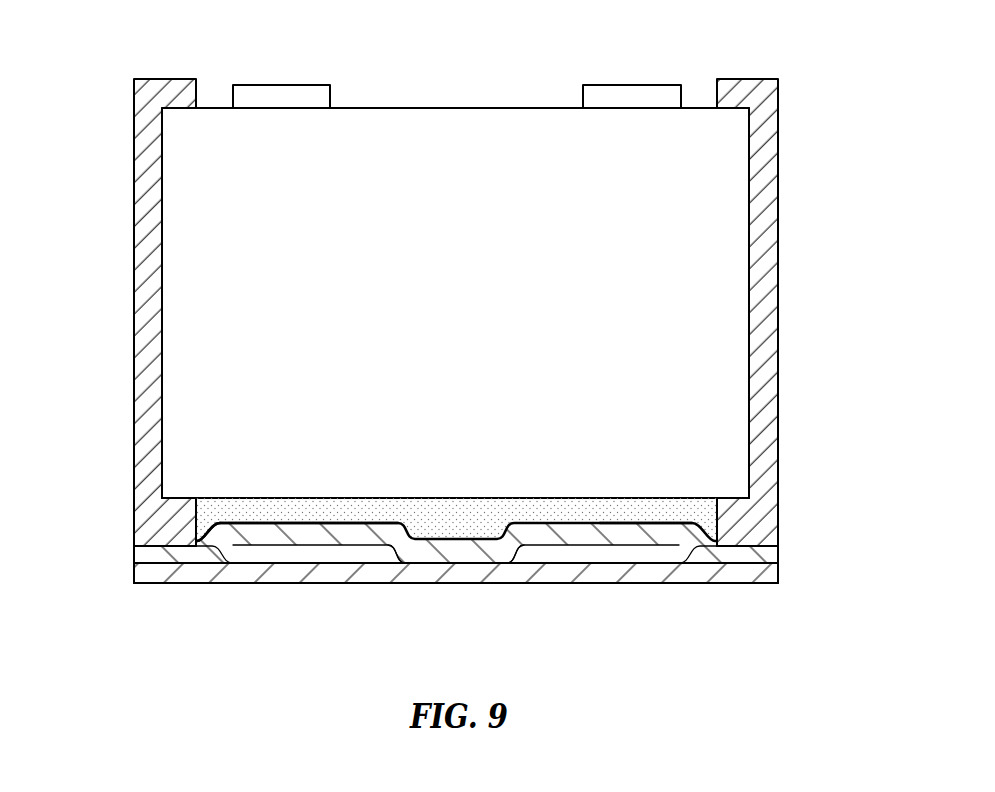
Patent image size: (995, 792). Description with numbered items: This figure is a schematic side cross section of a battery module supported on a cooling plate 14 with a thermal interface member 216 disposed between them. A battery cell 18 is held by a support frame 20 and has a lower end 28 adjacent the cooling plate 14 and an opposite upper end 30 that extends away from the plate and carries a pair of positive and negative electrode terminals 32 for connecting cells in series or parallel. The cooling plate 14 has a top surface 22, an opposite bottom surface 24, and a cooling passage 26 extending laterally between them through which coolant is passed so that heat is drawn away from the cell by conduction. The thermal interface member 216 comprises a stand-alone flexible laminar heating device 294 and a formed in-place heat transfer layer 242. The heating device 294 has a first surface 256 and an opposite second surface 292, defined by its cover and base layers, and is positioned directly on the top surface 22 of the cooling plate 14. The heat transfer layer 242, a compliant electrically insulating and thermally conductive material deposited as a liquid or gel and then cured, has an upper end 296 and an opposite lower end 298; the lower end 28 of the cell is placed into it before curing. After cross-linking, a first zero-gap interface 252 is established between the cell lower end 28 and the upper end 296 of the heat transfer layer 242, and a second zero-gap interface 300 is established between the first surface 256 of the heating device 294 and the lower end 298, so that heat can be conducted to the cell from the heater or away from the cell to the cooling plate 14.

The cooling plate 14 is at (133, 563).
The battery cell 18 is at (407, 107).
The support frame 20 is at (133, 243).
The top surface 22 is at (150, 545).
The bottom surface 24 is at (185, 583).
The cooling passage 26 is at (590, 566).
The lower end 28 is at (240, 512).
The upper end 30 is at (544, 98).
The electrode terminals 32 is at (285, 85).
The thermal interface member 216 is at (729, 514).
The heat transfer layer 242 is at (430, 498).
The first zero-gap interface 252 is at (183, 502).
The first surface 256 is at (352, 520).
The second surface 292 is at (540, 540).
The laminar heating device 294 is at (273, 522).
The upper end 296 is at (627, 488).
The lower end 298 is at (658, 532).
The second zero-gap interface 300 is at (729, 540).